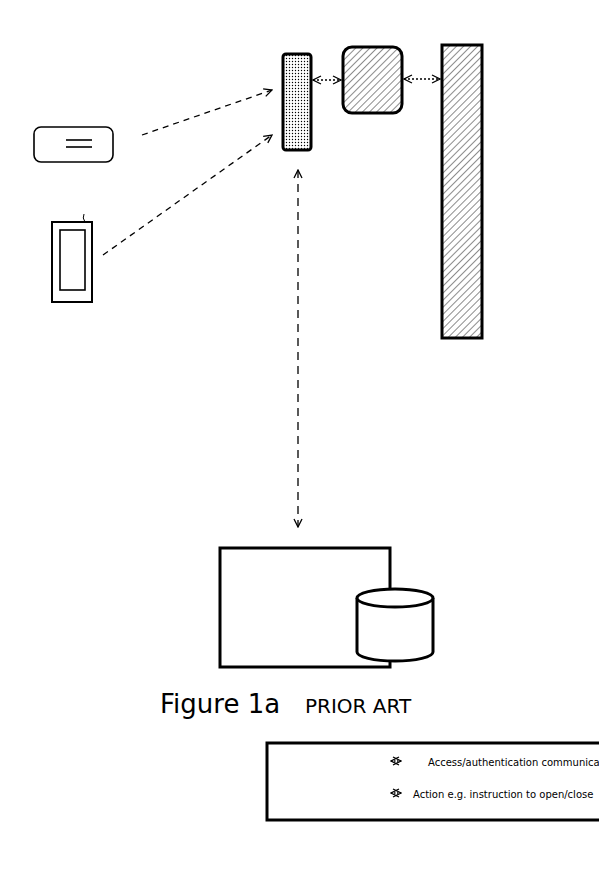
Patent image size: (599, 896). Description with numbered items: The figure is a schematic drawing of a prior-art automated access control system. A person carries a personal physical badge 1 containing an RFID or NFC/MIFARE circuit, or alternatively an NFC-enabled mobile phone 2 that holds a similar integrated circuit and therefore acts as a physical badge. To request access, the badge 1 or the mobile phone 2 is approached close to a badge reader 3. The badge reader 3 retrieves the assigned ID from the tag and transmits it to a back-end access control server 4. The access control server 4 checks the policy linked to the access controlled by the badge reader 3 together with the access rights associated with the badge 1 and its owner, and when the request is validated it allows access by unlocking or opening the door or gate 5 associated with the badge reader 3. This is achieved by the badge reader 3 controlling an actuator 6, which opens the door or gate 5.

The badge 1 is at (112, 166).
The mobile phone 2 is at (94, 294).
The badge reader 3 is at (278, 56).
The access control server 4 is at (392, 553).
The door 5 is at (485, 71).
The actuator 6 is at (378, 46).